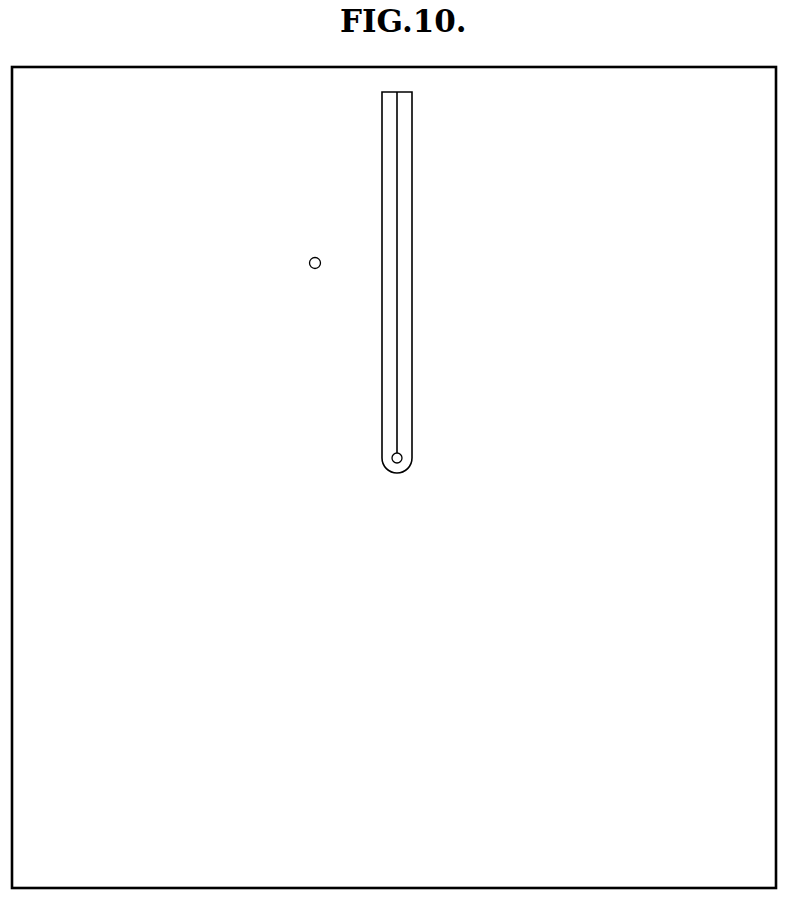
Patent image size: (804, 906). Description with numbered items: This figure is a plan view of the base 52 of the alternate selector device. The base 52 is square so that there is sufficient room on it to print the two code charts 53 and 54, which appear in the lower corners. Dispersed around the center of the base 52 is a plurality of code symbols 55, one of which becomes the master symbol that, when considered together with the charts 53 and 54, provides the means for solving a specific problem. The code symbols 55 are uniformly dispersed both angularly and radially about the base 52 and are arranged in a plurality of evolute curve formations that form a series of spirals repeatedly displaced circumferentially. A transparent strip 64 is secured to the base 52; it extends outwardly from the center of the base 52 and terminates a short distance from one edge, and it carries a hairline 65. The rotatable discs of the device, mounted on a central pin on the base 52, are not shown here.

The base 52 is at (620, 77).
The code chart 53 is at (70, 639).
The code chart 54 is at (705, 690).
The code symbols 55 is at (238, 359).
The transparent strip 64 is at (412, 219).
The hairline 65 is at (398, 180).